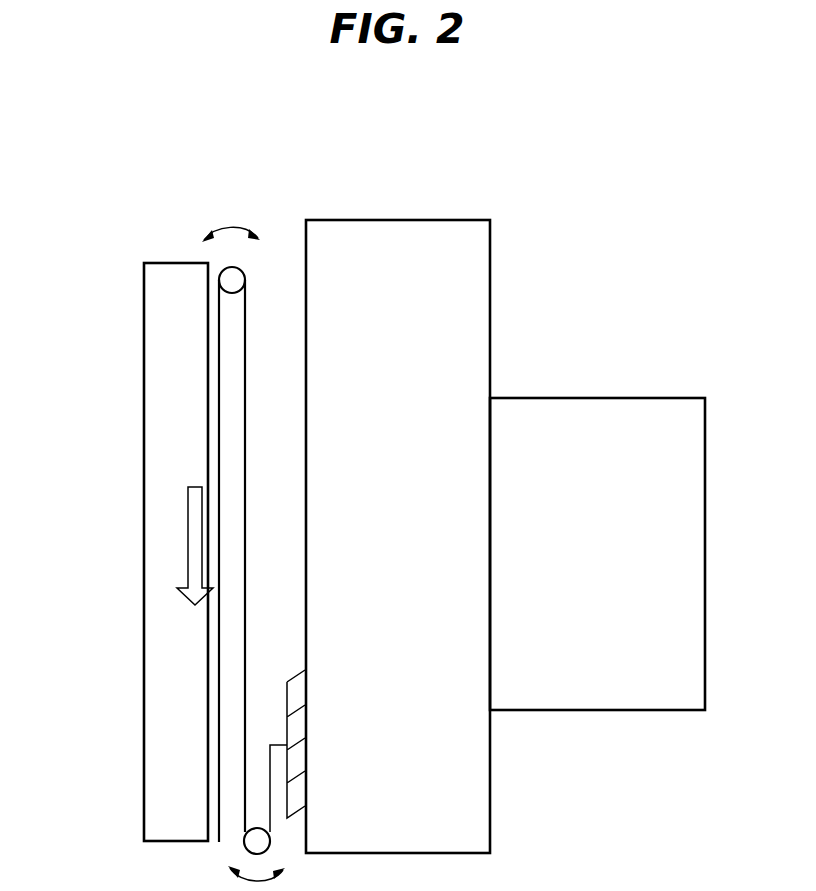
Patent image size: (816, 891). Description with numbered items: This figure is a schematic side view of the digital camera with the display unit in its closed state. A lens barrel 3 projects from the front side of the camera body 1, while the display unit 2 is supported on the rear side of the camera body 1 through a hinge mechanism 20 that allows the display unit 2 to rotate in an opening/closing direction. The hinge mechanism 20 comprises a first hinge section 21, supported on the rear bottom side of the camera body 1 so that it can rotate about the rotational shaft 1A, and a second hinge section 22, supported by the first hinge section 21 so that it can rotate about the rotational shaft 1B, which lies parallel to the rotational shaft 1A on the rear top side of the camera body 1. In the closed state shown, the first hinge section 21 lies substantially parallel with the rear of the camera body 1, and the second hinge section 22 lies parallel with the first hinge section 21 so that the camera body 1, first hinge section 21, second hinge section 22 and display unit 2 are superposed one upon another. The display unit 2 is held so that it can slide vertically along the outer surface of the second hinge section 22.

The camera body 1 is at (475, 229).
The rotational shaft 1A is at (265, 841).
The rotational shaft 1B is at (232, 266).
The display unit 2 is at (150, 672).
The lens barrel 3 is at (632, 408).
The hinge mechanism 20 is at (308, 193).
The first hinge section 21 is at (245, 345).
The second hinge section 22 is at (218, 405).